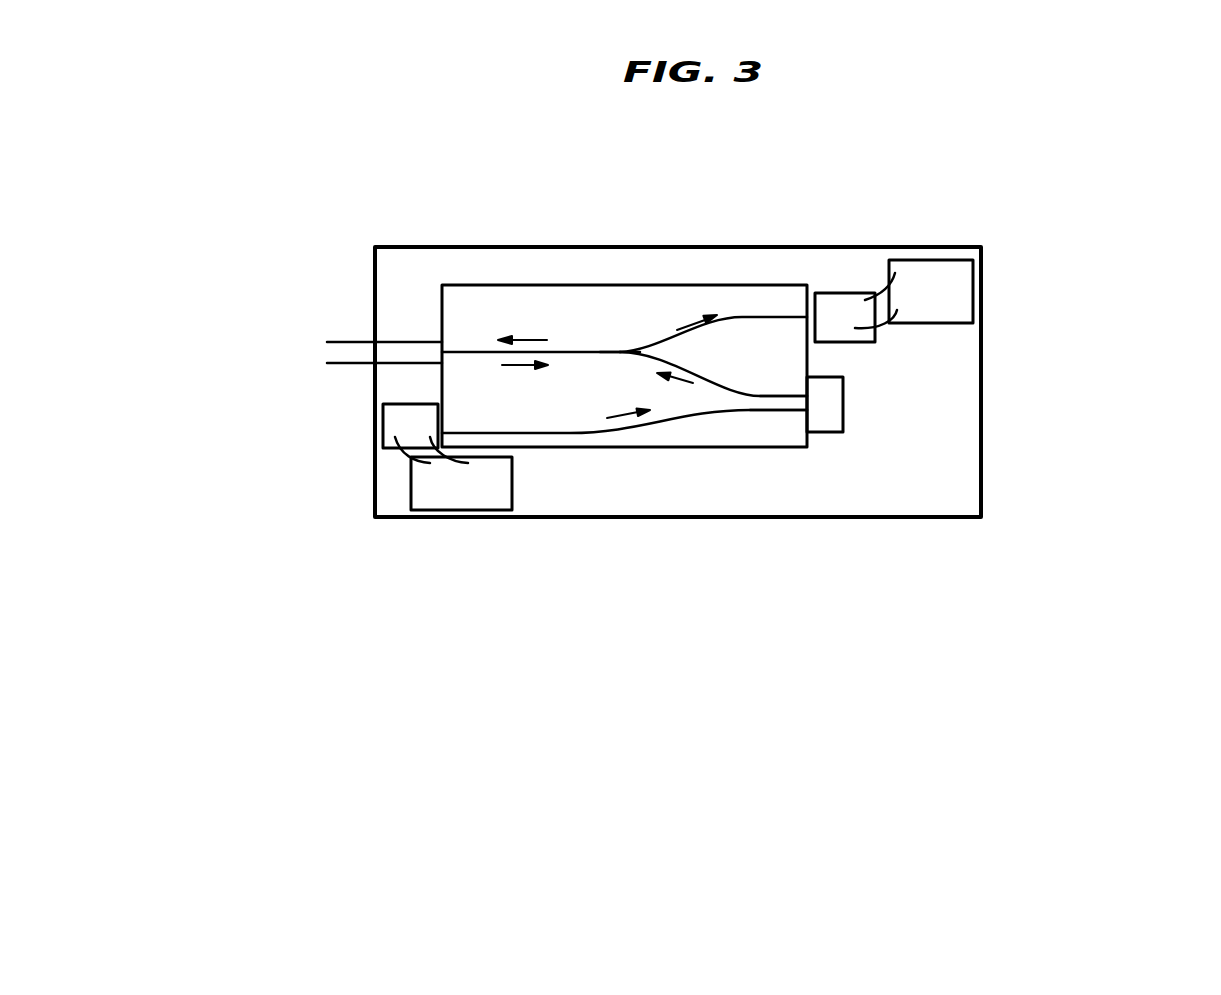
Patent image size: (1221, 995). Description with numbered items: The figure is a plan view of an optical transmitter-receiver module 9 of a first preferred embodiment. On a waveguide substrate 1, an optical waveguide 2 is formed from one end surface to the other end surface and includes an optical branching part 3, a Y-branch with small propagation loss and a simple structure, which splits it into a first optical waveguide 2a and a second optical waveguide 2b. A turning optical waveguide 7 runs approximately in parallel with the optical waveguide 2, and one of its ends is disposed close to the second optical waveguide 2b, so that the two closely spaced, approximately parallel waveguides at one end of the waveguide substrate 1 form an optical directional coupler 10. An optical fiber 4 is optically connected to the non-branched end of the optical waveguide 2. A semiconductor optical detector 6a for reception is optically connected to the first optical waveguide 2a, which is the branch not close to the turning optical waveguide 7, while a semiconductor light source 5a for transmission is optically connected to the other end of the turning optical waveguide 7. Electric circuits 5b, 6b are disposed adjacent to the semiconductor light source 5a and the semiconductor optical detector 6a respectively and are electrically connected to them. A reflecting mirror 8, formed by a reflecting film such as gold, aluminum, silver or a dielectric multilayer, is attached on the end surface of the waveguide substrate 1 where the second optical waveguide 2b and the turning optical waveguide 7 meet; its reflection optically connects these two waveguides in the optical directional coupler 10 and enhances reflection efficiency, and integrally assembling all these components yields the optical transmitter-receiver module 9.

The waveguide substrate 1 is at (785, 448).
The optical waveguide 2 is at (558, 350).
The first optical waveguide 2a is at (742, 328).
The second optical waveguide 2b is at (758, 395).
The optical branching part 3 is at (631, 350).
The optical fiber 4 is at (365, 352).
The semiconductor light source 5a is at (398, 428).
The electric circuit 5b is at (433, 493).
The semiconductor optical detector 6a is at (870, 330).
The electric circuit 6b is at (942, 274).
The turning optical waveguide 7 is at (622, 433).
The reflecting mirror 8 is at (837, 415).
The optical transmitter-receiver module 9 is at (920, 524).
The optical directional coupler 10 is at (747, 418).